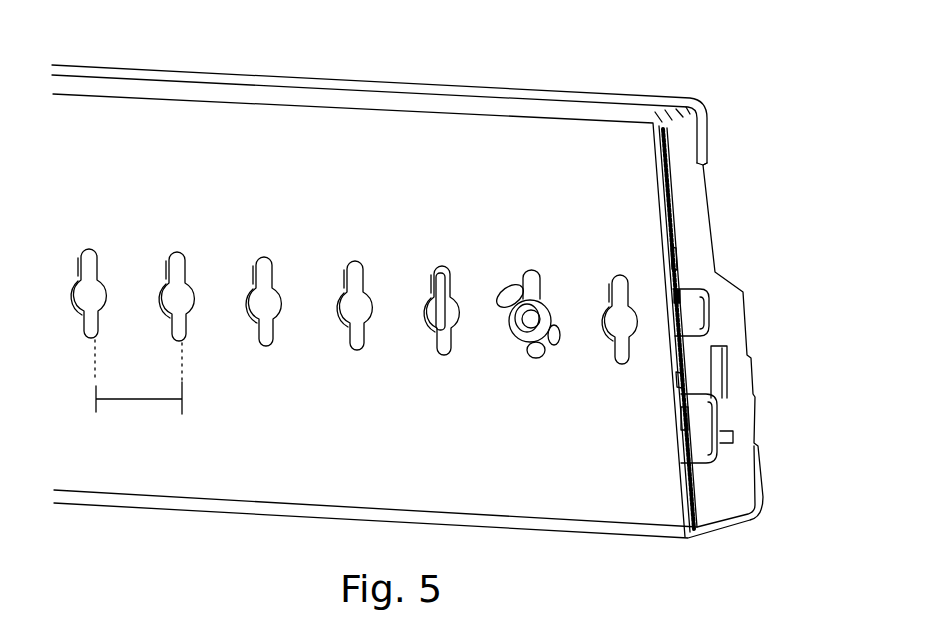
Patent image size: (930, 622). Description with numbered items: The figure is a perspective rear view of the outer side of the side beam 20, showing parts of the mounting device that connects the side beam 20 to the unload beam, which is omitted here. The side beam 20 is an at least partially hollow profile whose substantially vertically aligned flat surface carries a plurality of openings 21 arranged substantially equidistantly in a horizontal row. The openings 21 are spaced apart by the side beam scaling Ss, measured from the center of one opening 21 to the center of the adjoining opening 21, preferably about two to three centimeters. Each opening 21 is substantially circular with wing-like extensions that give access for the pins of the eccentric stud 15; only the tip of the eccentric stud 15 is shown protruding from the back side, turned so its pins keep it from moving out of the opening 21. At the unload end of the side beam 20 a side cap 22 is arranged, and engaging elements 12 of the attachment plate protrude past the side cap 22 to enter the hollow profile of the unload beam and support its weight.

The side beam 20 is at (317, 145).
The opening 21 is at (267, 313).
The side cap 22 is at (702, 209).
The engaging element 12 is at (692, 308).
The eccentric stud 15 is at (518, 333).
The side beam scaling Ss is at (138, 403).